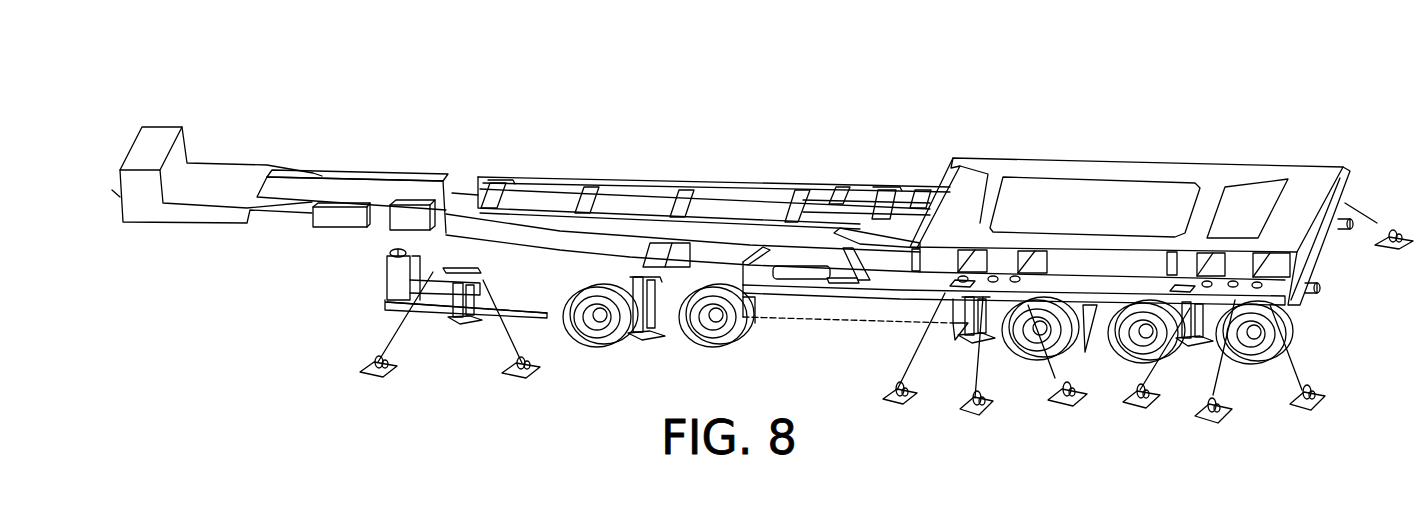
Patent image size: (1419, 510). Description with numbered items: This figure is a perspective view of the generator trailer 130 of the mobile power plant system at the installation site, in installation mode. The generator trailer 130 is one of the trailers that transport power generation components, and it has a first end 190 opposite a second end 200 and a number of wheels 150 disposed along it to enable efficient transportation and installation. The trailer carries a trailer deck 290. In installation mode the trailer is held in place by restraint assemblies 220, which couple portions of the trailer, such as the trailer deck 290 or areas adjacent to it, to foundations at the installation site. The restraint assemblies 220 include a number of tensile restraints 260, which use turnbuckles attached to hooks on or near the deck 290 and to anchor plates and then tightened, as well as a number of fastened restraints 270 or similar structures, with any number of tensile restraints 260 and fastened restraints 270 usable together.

The generator trailer 130 is at (273, 114).
The first end 190 is at (130, 141).
The trailer deck 290 is at (794, 186).
The second end 200 is at (1341, 187).
The wheels 150 is at (713, 342).
The restraint assemblies 220 is at (352, 376).
The tensile restraints 260 is at (893, 403).
The fastened restraints 270 is at (657, 344).